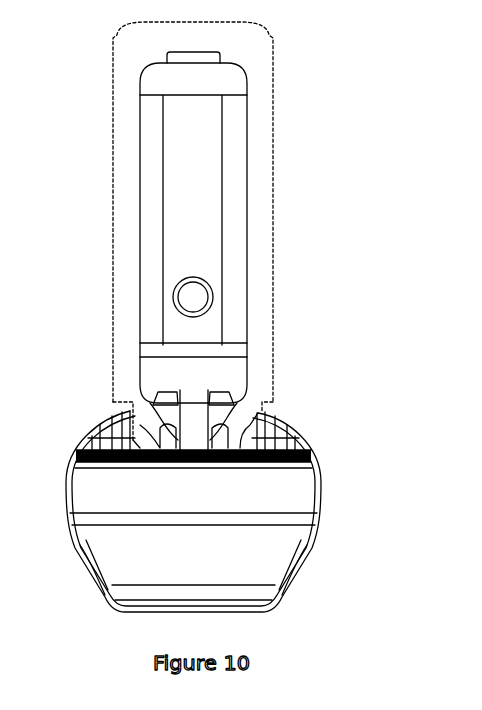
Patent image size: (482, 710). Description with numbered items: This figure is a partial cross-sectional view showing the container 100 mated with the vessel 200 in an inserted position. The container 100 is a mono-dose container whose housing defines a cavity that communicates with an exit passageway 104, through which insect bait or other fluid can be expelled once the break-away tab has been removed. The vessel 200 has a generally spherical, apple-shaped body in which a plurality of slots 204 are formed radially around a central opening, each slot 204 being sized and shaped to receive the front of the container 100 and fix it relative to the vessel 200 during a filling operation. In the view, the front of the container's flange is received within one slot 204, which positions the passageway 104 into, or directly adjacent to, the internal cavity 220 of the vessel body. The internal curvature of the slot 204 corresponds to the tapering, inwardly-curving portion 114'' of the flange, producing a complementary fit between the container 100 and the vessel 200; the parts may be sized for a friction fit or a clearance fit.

The container 100 is at (307, 173).
The passageway 104 is at (180, 440).
The inwardly-curving portion of the flange 114'' is at (107, 400).
The slot 204 is at (238, 438).
The vessel 200 is at (245, 493).
The internal cavity 220 is at (208, 565).